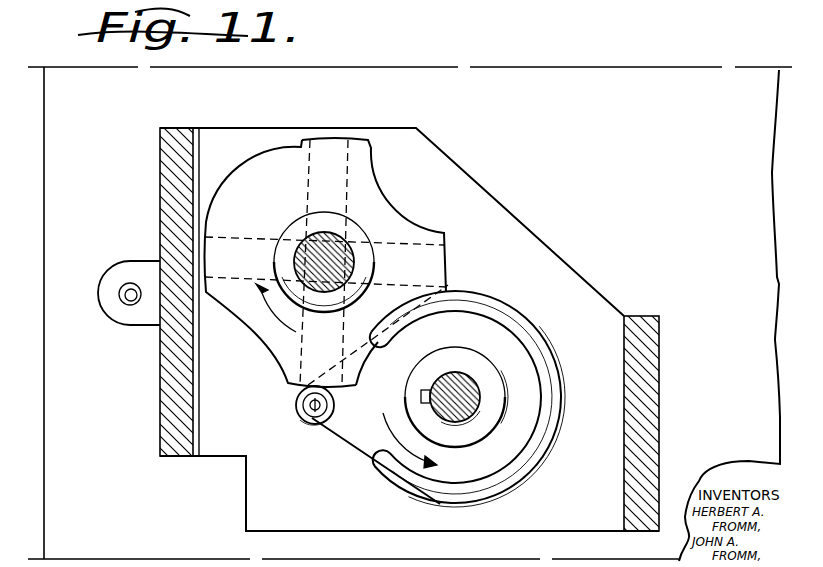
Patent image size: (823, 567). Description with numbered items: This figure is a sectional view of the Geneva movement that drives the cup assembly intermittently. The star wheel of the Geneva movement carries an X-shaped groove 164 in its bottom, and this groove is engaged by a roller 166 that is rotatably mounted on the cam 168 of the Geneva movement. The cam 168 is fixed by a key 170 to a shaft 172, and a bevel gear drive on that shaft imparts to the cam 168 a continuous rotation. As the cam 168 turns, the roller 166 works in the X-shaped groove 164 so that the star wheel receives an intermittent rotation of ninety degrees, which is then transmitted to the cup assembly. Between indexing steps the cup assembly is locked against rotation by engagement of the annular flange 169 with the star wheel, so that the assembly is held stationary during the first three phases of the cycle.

The X-shaped groove 164 is at (345, 148).
The roller 166 is at (312, 419).
The cam 168 is at (514, 356).
The annular flange 169 is at (533, 291).
The key 170 is at (421, 396).
The shaft 172 is at (459, 386).